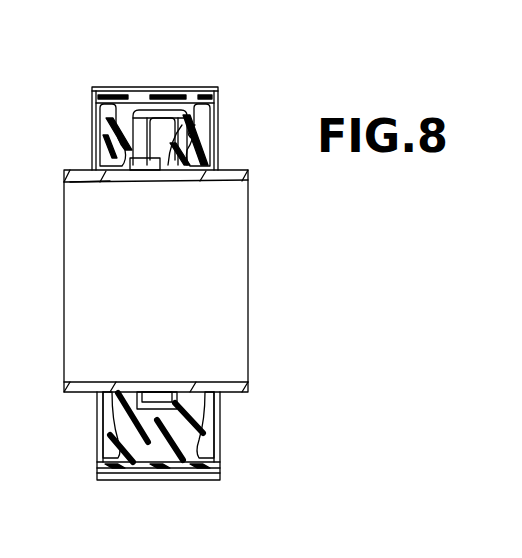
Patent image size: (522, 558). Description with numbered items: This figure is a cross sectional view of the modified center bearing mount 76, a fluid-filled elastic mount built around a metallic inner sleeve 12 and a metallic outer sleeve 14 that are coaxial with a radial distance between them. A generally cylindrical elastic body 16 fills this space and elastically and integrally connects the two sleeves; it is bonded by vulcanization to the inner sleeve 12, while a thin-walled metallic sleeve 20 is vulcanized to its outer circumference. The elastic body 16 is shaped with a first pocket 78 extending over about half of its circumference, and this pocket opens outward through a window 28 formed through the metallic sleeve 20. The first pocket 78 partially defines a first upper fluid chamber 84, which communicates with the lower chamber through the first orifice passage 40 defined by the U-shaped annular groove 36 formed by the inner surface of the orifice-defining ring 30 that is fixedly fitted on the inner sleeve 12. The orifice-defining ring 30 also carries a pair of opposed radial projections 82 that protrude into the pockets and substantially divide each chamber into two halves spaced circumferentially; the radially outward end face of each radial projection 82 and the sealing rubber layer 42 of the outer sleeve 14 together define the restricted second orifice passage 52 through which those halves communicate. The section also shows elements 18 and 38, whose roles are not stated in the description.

The inner sleeve 12 is at (250, 387).
The outer sleeve 14 is at (123, 480).
The elastic body 16 is at (183, 437).
The end wall 18 is at (87, 183).
The thin-walled metallic sleeve 20 is at (182, 480).
The windows 28 is at (192, 103).
The orifice-defining ring 30 is at (158, 418).
The U-shaped annular groove 36 is at (166, 398).
The central block 38 is at (148, 172).
The first orifice passage 40 is at (150, 398).
The sealing rubber layer 42 is at (130, 97).
The second orifice passage 52 is at (160, 137).
The center bearing mount 76 is at (250, 62).
The first pocket 78 is at (205, 146).
The radial projections 82 is at (128, 113).
The first upper fluid chamber 84 is at (157, 100).